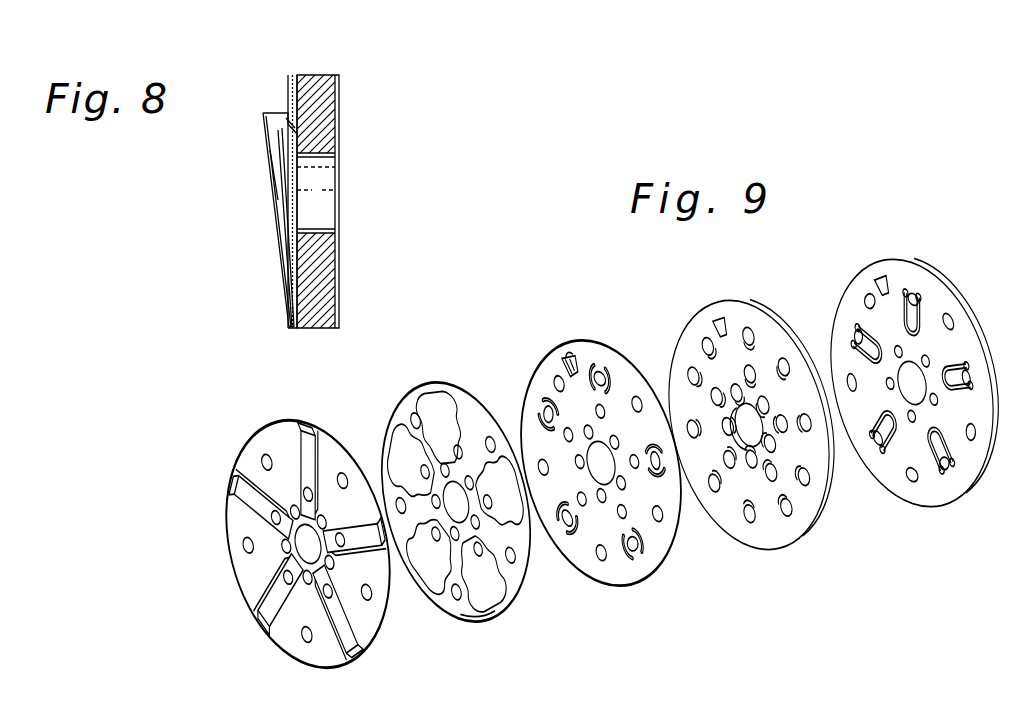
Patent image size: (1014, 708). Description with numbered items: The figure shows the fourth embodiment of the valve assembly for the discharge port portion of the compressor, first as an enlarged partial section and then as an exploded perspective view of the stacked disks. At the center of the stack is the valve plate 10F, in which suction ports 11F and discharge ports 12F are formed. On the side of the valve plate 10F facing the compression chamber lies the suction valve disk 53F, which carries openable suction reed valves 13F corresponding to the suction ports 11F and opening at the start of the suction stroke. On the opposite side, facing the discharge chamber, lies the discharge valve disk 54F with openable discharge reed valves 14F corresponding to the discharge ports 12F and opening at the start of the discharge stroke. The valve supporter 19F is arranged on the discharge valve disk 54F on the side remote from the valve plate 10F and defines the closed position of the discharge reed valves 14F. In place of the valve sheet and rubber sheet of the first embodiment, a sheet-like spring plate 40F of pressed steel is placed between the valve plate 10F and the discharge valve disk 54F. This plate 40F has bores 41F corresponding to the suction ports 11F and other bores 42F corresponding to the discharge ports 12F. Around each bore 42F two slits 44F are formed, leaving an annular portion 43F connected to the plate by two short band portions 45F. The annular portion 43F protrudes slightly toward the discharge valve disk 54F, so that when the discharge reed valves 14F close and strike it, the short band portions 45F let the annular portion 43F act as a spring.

In FIG. 9, the valve plate 10F is at (725, 522).
In FIG. 9, the suction port 11F is at (740, 372).
In FIG. 8, the discharge port 12F is at (328, 220).
In FIG. 9, the discharge port 12F is at (743, 337).
In FIG. 8, the suction reed valve 13F is at (340, 292).
In FIG. 9, the suction reed valve 13F is at (933, 445).
In FIG. 8, the discharge reed valve 14F is at (283, 205).
In FIG. 9, the discharge reed valve 14F is at (443, 597).
In FIG. 8, the valve supporter 19F is at (282, 238).
In FIG. 9, the valve supporter 19F is at (273, 632).
In FIG. 8, the sheet-like spring plate 40F is at (293, 76).
In FIG. 9, the sheet-like spring plate 40F is at (580, 558).
In FIG. 9, the bore 41F is at (600, 397).
In FIG. 8, the bore 42F is at (277, 180).
In FIG. 9, the bore 42F is at (573, 356).
In FIG. 8, the annular portion 43F is at (287, 145).
In FIG. 9, the annular portion 43F is at (590, 370).
In FIG. 9, the slit 44F is at (602, 370).
In FIG. 8, the short band portion 45F is at (290, 137).
In FIG. 9, the short band portion 45F is at (578, 357).
In FIG. 9, the suction valve disk 53F is at (935, 487).
In FIG. 8, the discharge valve disk 54F is at (295, 253).
In FIG. 9, the discharge valve disk 54F is at (477, 612).